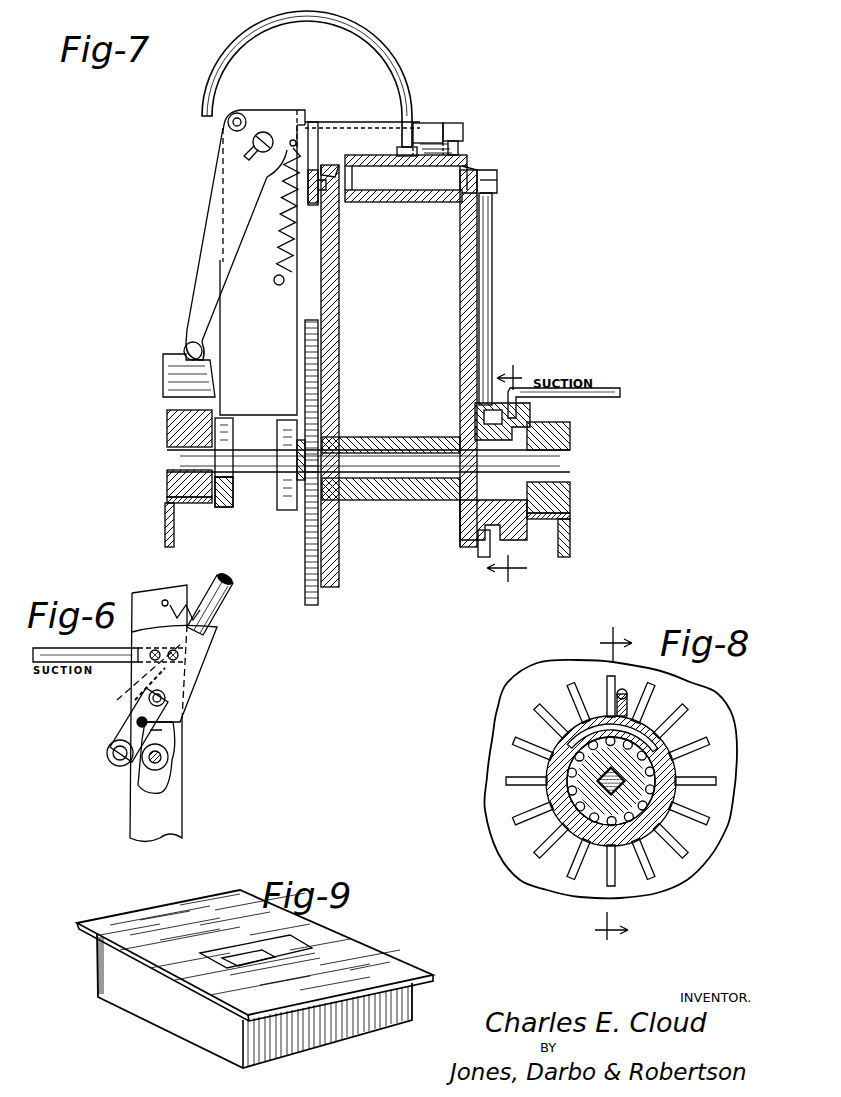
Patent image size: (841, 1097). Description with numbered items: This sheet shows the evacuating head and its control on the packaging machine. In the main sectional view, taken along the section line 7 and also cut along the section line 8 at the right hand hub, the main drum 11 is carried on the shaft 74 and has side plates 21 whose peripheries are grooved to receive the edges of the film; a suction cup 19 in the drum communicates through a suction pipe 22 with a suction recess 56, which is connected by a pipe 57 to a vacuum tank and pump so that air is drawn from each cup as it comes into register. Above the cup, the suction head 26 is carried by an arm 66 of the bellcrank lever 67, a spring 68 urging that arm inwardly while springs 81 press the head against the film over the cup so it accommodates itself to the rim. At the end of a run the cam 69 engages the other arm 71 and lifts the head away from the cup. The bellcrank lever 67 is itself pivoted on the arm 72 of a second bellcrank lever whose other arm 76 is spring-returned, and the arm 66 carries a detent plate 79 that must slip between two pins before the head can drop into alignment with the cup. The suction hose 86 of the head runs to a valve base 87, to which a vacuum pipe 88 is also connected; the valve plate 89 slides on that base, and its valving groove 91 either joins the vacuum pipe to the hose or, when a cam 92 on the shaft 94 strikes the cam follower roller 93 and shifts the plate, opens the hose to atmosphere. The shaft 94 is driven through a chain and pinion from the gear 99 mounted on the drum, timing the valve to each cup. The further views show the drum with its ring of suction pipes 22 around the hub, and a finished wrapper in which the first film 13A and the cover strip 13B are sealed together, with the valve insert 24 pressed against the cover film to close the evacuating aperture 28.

In FIG. 8, the section line 7— 7 is at (613, 790).
In FIG. 7, the section line 8— 8 is at (507, 481).
In FIG. 7, the main drum 11 is at (490, 180).
In FIG. 8, the main drum 11 is at (740, 737).
In FIG. 9, the first strip of film 13A is at (408, 1002).
In FIG. 9, the cover strip 13B is at (398, 958).
In FIG. 7, the suction cup 19 is at (400, 202).
In FIG. 7, the side plate 21 is at (339, 305).
In FIG. 8, the side plate 21 is at (730, 757).
In FIG. 7, the suction pipe 22 is at (492, 282).
In FIG. 8, the suction pipe 22 is at (700, 792).
In FIG. 9, the valve insert 24 is at (305, 945).
In FIG. 7, the suction head 26 is at (465, 160).
In FIG. 9, the evacuating aperture 28 is at (258, 958).
In FIG. 7, the suction recess 56 is at (530, 410).
In FIG. 8, the suction recess 56 is at (648, 724).
In FIG. 7, the pipe 57 is at (585, 397).
In FIG. 8, the pipe 57 is at (627, 690).
In FIG. 7, the arm 66 is at (425, 125).
In FIG. 7, the bellcrank lever 67 is at (232, 150).
In FIG. 7, the spring 68 is at (283, 228).
In FIG. 7, the cam 69 is at (165, 368).
In FIG. 7, the arm 71 is at (197, 303).
In FIG. 7, the arm 72 is at (285, 115).
In FIG. 7, the shaft 74 is at (215, 457).
In FIG. 7, the arm 76 is at (218, 508).
In FIG. 7, the detent plate 79 is at (320, 135).
In FIG. 7, the springs 81 is at (455, 128).
In FIG. 7, the suction hose 86 is at (402, 58).
In FIG. 6, the suction hose 86 is at (228, 598).
In FIG. 6, the valve base 87 is at (145, 602).
In FIG. 6, the vacuum pipe 88 is at (105, 650).
In FIG. 6, the valve plate 89 is at (195, 677).
In FIG. 6, the valving groove 91 is at (117, 700).
In FIG. 6, the cam 92 is at (160, 783).
In FIG. 6, the cam follower roller 93 is at (108, 760).
In FIG. 6, the shaft 94 is at (163, 752).
In FIG. 7, the gear 99 is at (318, 372).